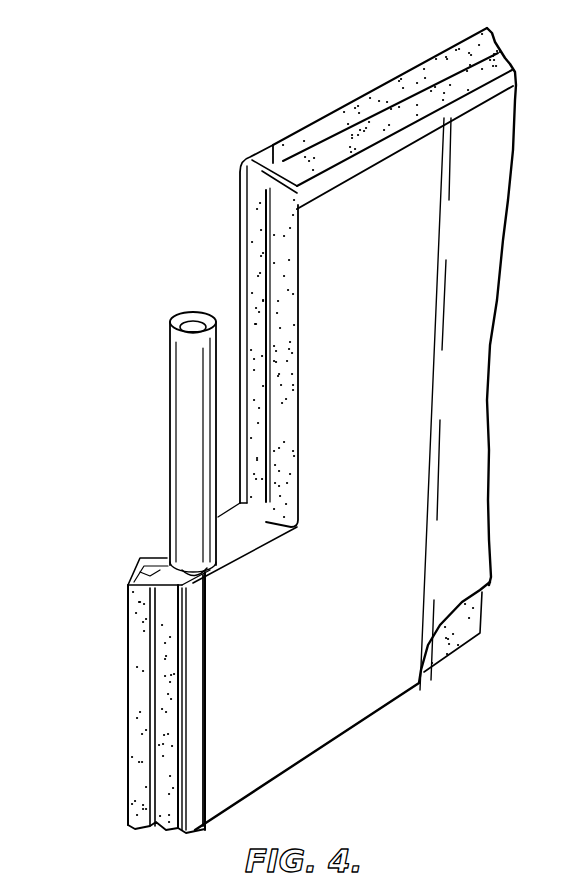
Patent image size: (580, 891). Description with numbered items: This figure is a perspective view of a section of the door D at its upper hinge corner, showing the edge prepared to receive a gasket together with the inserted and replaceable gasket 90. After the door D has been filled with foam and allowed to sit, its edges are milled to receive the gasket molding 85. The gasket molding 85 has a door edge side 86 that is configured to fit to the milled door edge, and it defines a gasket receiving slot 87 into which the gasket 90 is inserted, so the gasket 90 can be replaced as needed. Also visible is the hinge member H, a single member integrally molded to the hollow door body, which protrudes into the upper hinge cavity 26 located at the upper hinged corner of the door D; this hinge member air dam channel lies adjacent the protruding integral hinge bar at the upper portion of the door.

The upper hinge cavity 26 is at (232, 243).
The gasket molding 85 is at (335, 170).
The door edge side 86 is at (210, 571).
The gasket receiving slot 87 is at (147, 562).
The gasket 90 is at (353, 117).
The hinge member H is at (176, 448).
The door D is at (287, 719).